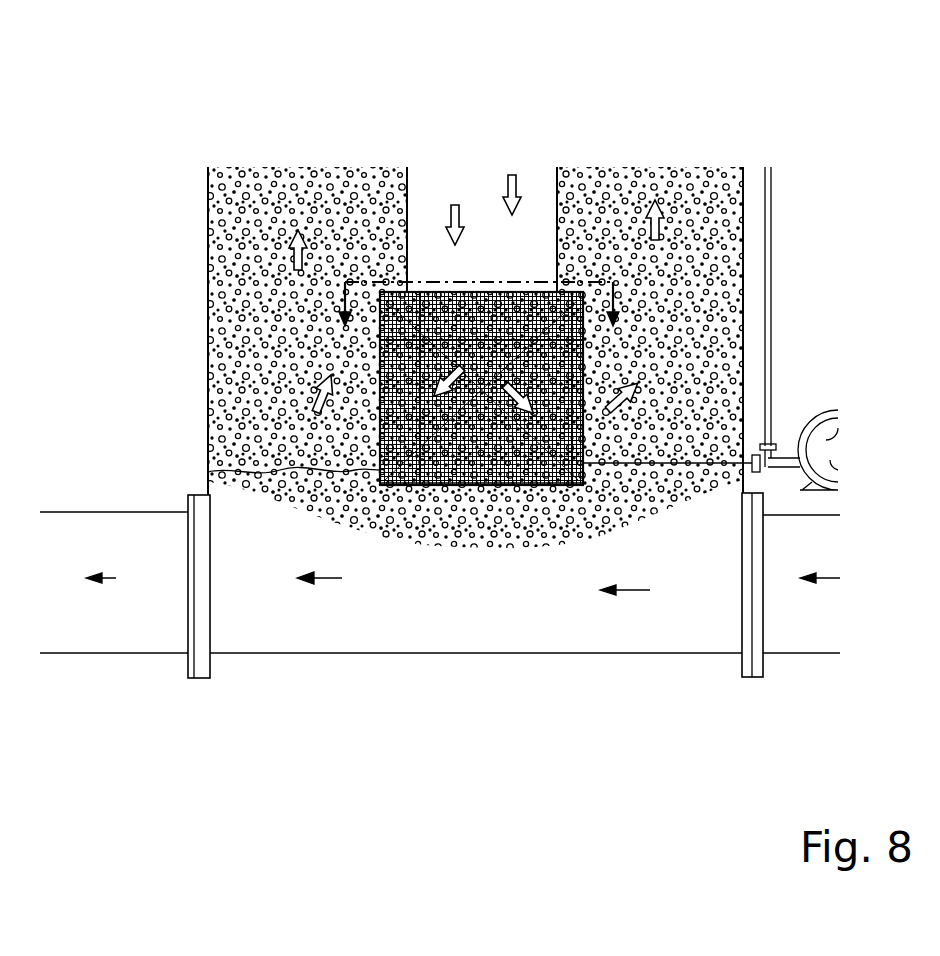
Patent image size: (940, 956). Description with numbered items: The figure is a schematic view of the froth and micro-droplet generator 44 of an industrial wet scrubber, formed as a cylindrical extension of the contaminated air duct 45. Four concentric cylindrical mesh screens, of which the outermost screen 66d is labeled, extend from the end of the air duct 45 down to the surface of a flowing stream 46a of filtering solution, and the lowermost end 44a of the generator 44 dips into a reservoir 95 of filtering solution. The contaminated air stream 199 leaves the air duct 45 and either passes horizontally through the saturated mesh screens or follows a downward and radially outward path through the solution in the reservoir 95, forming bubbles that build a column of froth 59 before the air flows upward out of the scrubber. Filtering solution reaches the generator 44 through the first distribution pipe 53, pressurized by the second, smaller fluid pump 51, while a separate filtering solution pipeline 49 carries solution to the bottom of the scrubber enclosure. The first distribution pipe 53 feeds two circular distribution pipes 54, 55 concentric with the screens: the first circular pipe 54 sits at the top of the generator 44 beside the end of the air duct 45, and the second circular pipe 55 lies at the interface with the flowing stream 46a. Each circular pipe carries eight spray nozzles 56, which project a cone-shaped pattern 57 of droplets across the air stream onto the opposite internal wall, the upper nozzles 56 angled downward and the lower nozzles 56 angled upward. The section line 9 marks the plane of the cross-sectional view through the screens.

The column of froth 59 is at (238, 170).
The contaminated air stream 199 is at (452, 200).
The contaminated air duct 45 is at (407, 256).
The froth generator 44 is at (488, 285).
The first circular filtering solution distribution pipe 54 is at (385, 307).
The second circular distribution pipe 55 is at (380, 470).
The section line 9- 9 is at (478, 324).
The second smaller fluid pump 51 is at (837, 408).
The reservoir of filtering solution 95 is at (298, 560).
The flowing stream of filtering solution 46a is at (300, 578).
The cylindrical mesh screen 66d is at (490, 485).
The lowermost end of generator 44a is at (537, 485).
The cone-shaped pattern of filtering solution droplets 57 is at (415, 485).
The filtering-solution spray nozzles 56 is at (571, 485).
The first distribution pipe 53 is at (647, 466).
The filtering solution pipeline 49 is at (96, 656).